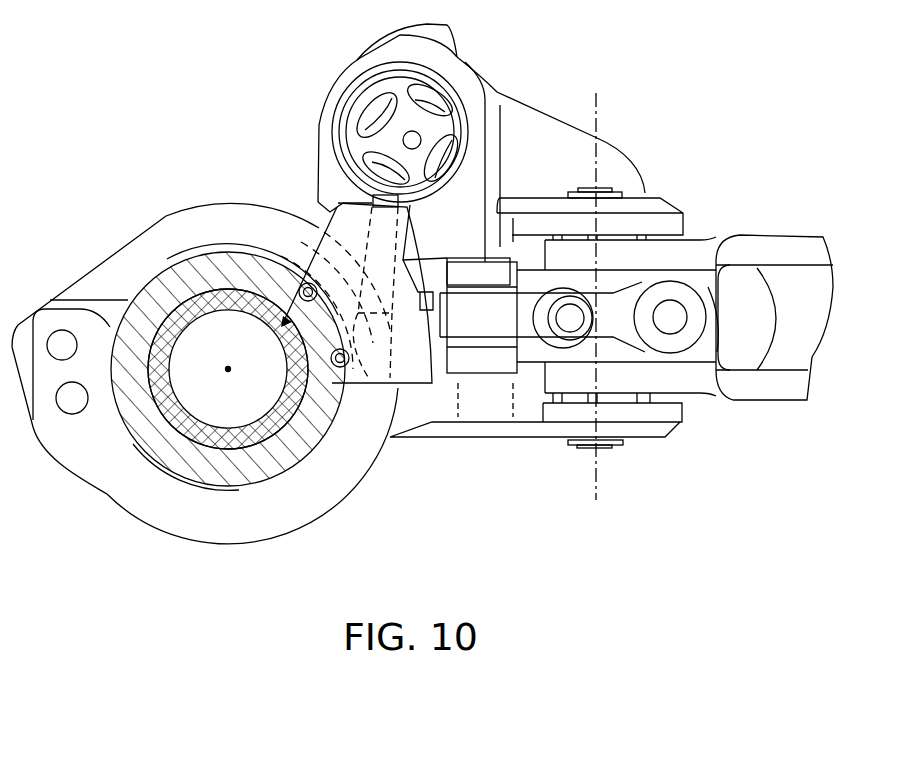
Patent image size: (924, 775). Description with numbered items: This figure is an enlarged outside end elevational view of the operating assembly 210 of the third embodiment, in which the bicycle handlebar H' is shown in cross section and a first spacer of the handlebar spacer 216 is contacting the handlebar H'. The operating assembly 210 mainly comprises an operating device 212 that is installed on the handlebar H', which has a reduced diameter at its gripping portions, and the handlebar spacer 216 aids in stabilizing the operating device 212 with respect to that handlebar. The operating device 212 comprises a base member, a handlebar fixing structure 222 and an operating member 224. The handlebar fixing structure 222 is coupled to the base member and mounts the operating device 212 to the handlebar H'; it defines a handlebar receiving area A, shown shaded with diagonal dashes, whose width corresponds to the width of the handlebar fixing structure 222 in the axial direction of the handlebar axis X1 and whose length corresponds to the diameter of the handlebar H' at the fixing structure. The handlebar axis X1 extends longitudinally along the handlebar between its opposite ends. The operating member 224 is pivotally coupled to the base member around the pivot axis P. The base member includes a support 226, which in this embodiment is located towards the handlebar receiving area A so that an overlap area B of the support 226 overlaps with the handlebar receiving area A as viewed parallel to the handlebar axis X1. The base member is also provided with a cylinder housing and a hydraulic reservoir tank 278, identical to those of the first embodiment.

The operating assembly 210 is at (183, 75).
The operating device 212 is at (703, 101).
The handlebar spacer 216 is at (253, 262).
The handlebar fixing structure 222 is at (132, 228).
The operating member 224 is at (778, 230).
The support 226 is at (410, 390).
The hydraulic reservoir tank 278 is at (542, 116).
The handlebar receiving area A is at (197, 268).
The overlap area B is at (348, 338).
The pivot axis P is at (597, 113).
The handlebar axis X1 is at (228, 371).
The handlebar H' is at (264, 461).